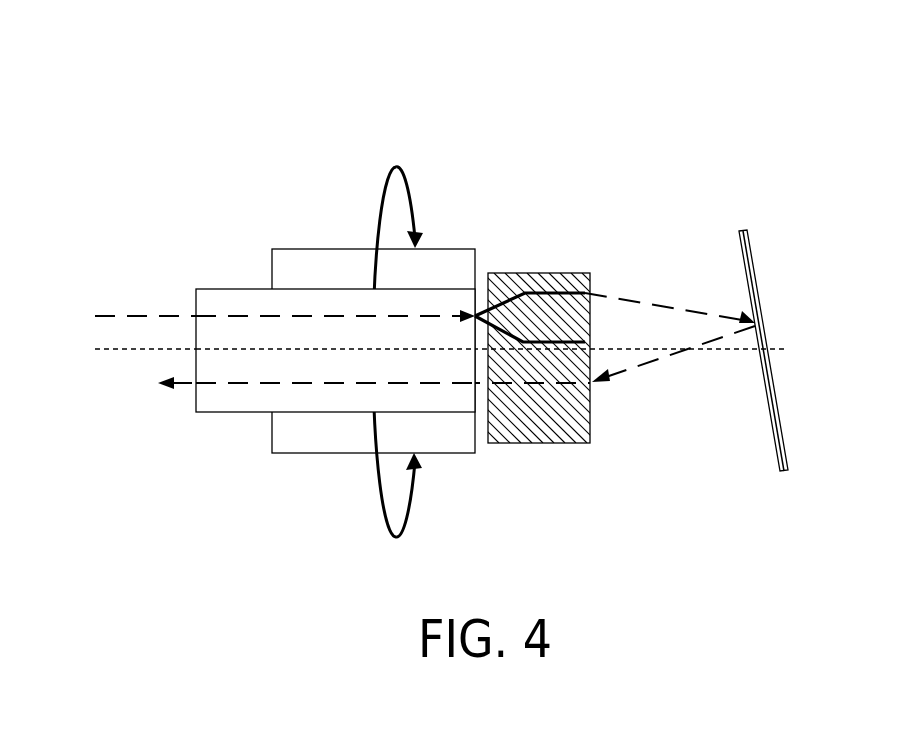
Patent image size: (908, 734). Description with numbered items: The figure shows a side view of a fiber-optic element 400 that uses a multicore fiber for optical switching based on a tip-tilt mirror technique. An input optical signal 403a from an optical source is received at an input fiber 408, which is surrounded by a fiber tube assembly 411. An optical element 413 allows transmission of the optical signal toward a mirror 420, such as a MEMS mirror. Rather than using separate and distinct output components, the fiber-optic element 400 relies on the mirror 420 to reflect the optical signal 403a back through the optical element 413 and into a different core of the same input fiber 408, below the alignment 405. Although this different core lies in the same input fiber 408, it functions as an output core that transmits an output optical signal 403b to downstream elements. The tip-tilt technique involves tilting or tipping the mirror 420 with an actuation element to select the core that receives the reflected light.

The fiber-optic element 400 is at (507, 46).
The input optical signal 403a is at (165, 315).
The output optical signal 403b is at (208, 387).
The alignment 405 is at (137, 350).
The input fiber 408 is at (230, 288).
The fiber tube assembly 411 is at (303, 248).
The optical element 413 is at (545, 273).
The mirror 420 is at (753, 270).